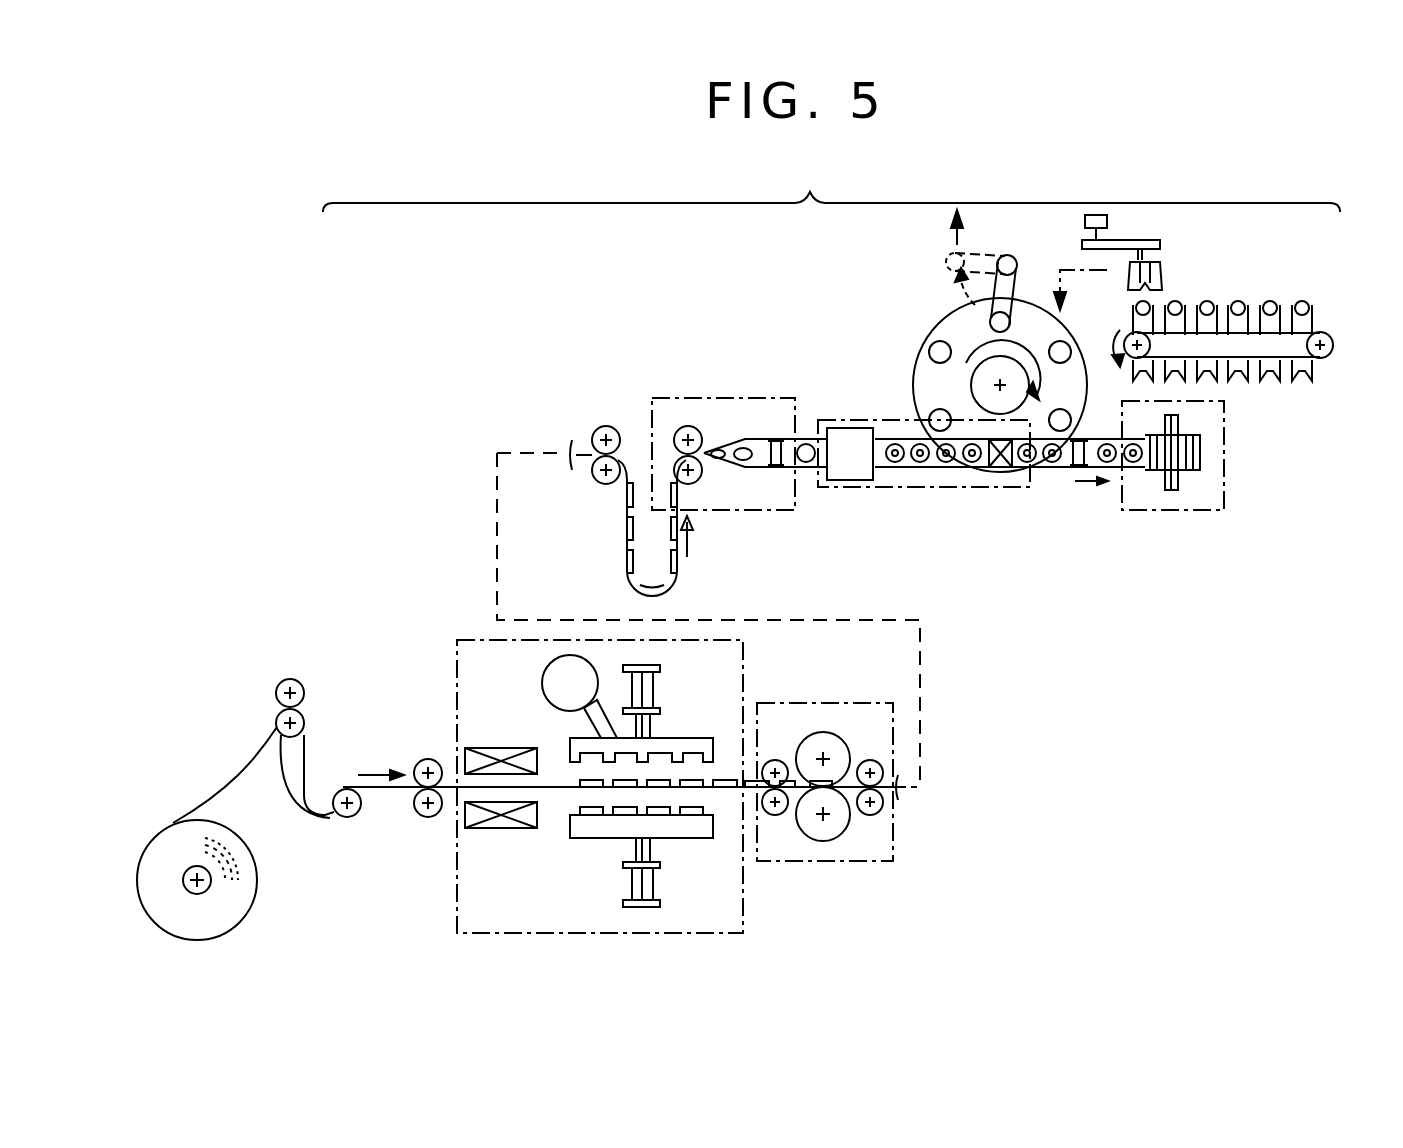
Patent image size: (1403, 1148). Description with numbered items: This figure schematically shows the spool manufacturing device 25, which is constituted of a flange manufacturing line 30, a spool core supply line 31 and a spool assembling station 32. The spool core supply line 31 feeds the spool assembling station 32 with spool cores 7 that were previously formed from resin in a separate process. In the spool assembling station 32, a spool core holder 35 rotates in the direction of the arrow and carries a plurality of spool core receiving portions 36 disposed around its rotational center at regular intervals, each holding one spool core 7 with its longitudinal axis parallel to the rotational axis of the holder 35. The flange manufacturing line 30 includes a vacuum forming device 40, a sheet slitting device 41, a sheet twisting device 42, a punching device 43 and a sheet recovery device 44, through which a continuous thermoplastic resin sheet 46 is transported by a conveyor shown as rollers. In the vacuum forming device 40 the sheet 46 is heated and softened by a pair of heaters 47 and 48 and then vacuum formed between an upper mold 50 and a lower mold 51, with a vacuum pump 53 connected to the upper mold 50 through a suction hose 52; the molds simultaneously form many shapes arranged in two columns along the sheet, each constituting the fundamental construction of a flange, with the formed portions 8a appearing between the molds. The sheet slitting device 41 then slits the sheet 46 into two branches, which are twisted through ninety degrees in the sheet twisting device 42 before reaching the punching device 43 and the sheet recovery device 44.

The spool manufacturing device 25 is at (831, 184).
The flange manufacturing line 30 is at (403, 488).
The sheet twisting device 42 is at (705, 398).
The punching device 43 is at (1075, 475).
The sheet recovery device 44 is at (1122, 506).
The spool assembling station 32 is at (926, 298).
The spool core holder 35 is at (930, 386).
The spool core receiving portions 36 is at (935, 346).
The spool cores 7 is at (1310, 305).
The spool core supply line 31 is at (1244, 370).
The vacuum forming device 40 is at (455, 666).
The sheet slitting device 41 is at (819, 783).
The continuous sheet of thermoplastic resin 46 is at (228, 797).
The heater 47 is at (497, 760).
The heater 48 is at (515, 830).
The upper mold 50 is at (695, 748).
The lower mold 51 is at (705, 838).
The suction hose 52 is at (594, 718).
The vacuum pump 53 is at (550, 678).
The punched pieces 8a is at (588, 785).